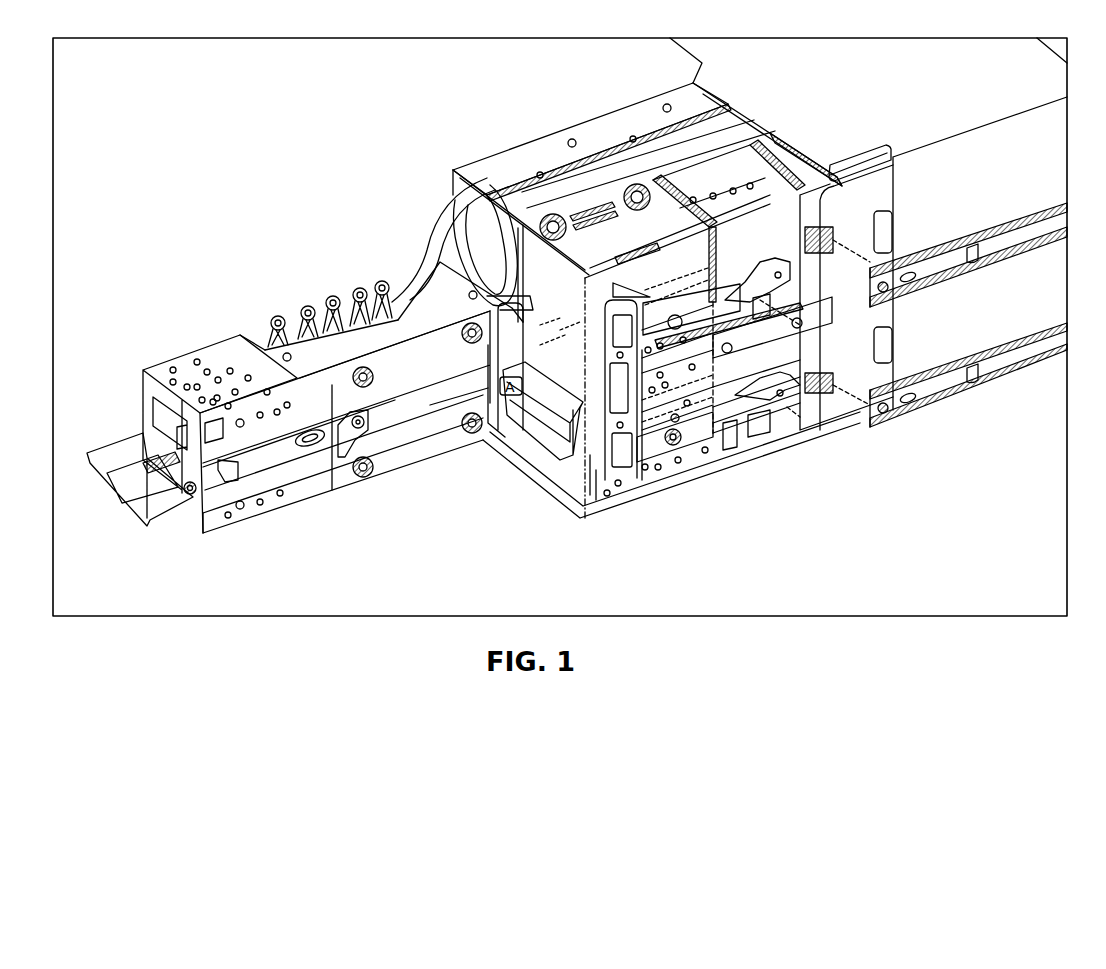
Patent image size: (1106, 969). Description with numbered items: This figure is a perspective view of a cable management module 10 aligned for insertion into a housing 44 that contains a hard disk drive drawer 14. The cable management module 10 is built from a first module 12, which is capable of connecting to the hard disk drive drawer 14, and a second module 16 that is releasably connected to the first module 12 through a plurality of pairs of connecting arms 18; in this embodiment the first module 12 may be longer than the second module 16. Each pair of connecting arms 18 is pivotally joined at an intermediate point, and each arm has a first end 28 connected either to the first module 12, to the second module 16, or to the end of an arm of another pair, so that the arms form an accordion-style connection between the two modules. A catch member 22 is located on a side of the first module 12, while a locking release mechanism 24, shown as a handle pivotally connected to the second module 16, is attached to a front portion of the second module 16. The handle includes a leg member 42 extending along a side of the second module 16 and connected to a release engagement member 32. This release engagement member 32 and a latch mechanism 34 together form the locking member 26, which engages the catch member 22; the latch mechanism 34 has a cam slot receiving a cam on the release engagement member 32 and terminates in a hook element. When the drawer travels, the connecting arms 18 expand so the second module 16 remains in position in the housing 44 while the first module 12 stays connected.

The cable management module 10 is at (185, 317).
The first module 12 is at (440, 432).
The hard disk drive drawer 14 is at (803, 205).
The second module 16 is at (280, 497).
The pairs of connecting arms 18 is at (301, 306).
The catch member 22 is at (358, 428).
The locking release mechanism 24 is at (150, 520).
The locking member 26 is at (293, 473).
The first end 28 is at (383, 282).
The release engagement member 32 is at (240, 509).
The latch mechanism 34 is at (385, 437).
The leg member 42 is at (195, 500).
The housing 44 is at (983, 338).